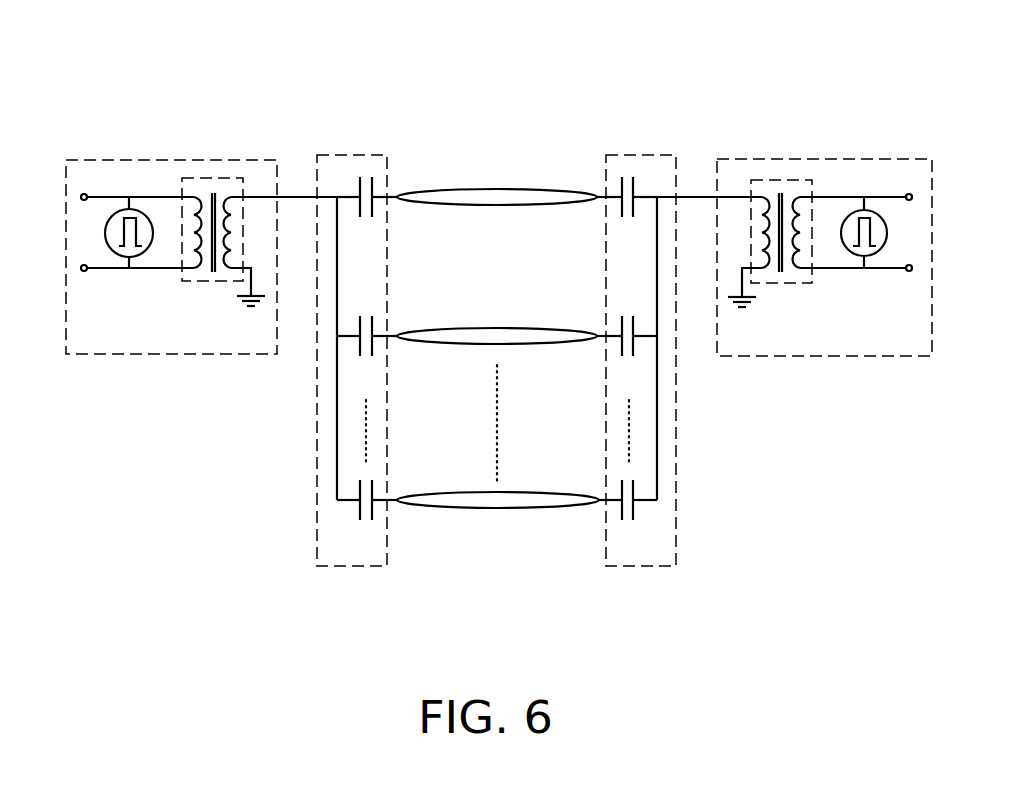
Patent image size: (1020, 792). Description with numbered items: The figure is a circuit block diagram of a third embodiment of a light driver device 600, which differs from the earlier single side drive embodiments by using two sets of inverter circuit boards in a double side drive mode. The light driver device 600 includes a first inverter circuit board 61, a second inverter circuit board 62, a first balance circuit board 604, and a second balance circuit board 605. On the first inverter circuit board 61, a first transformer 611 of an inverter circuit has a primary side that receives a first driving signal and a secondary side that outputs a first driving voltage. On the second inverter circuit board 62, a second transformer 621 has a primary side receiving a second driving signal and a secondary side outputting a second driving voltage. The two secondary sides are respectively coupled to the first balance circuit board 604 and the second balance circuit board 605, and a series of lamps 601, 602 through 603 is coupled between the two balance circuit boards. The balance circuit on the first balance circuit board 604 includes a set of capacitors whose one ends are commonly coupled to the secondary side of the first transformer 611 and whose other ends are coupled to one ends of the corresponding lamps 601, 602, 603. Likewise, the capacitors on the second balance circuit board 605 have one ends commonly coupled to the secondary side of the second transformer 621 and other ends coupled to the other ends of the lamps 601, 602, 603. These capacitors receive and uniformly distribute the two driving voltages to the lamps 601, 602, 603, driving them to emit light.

The light driver device 600 is at (617, 53).
The first inverter circuit board 61 is at (212, 158).
The second inverter circuit board 62 is at (762, 158).
The first balance circuit board 604 is at (353, 155).
The second balance circuit board 605 is at (625, 155).
The lamp 601 is at (497, 189).
The lamp 602 is at (497, 328).
The lamp 603 is at (520, 492).
The first transformer 611 is at (219, 278).
The second transformer 621 is at (777, 283).